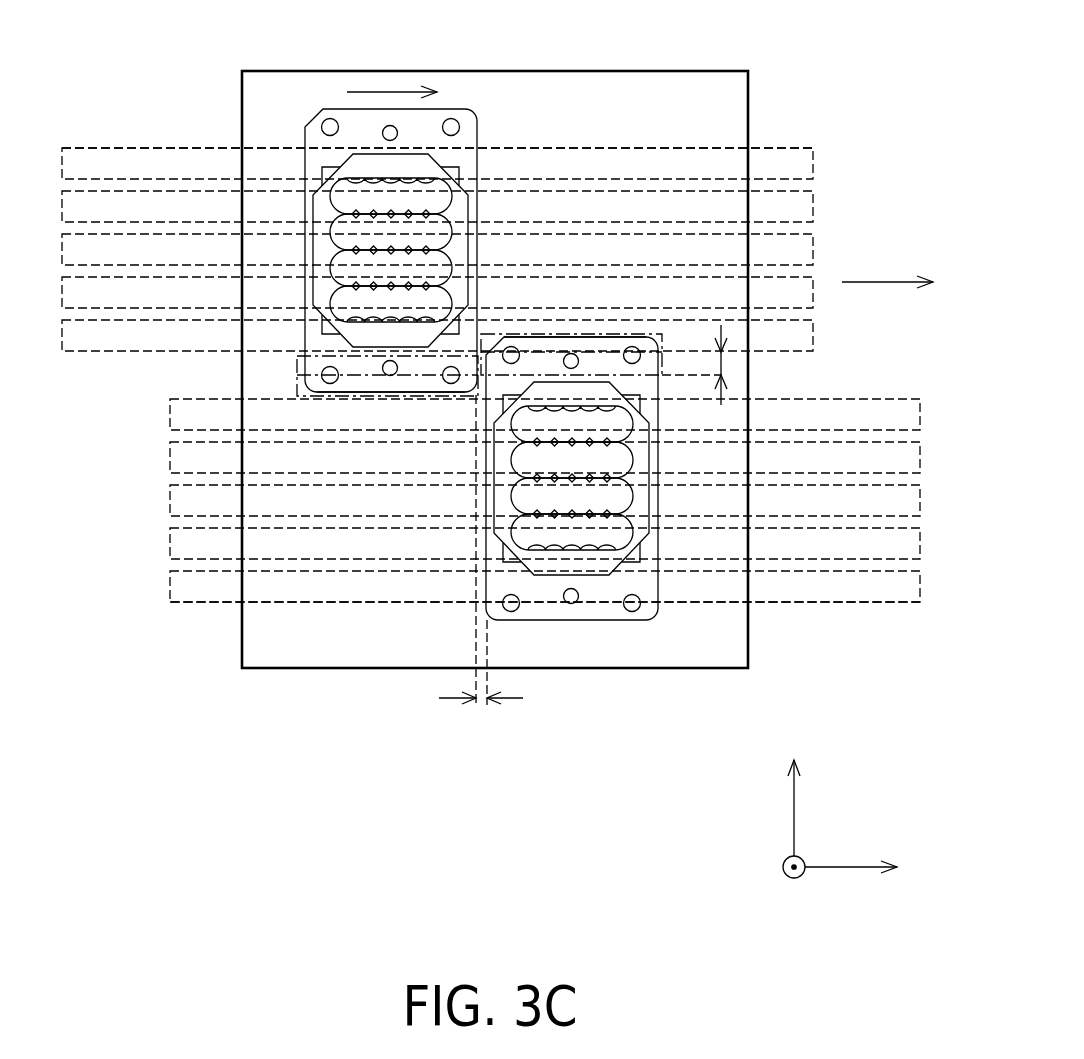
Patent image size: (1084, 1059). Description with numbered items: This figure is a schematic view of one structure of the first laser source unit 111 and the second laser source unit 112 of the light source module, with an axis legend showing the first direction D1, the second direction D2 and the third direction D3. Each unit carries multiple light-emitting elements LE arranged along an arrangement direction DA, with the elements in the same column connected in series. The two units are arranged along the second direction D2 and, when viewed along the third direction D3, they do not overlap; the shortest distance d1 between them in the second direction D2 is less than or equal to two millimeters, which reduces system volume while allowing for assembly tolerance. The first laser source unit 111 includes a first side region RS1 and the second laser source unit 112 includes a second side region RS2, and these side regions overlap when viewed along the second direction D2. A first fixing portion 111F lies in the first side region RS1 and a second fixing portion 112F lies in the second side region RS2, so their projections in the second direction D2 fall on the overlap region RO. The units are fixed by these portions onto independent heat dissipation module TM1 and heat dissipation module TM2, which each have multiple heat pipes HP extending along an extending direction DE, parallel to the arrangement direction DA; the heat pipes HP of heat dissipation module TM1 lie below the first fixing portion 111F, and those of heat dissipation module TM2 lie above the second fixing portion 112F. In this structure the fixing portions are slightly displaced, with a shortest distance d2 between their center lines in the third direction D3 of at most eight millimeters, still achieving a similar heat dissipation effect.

The first laser source unit 111 is at (603, 593).
The second laser source unit 112 is at (311, 128).
The first fixing portion 111F is at (541, 345).
The second fixing portion 112F is at (360, 385).
The light-emitting elements LE is at (415, 200).
The arrangement direction DA is at (388, 88).
The extending direction DE is at (880, 283).
The heat pipes HP is at (650, 147).
The first side region RS1 is at (663, 338).
The second side region RS2 is at (297, 375).
The heat dissipation module TM1 is at (150, 543).
The heat dissipation module TM2 is at (845, 240).
The overlap region RO is at (762, 352).
The shortest distance d1 is at (481, 572).
The shortest distance d2 is at (723, 363).
The first direction D1 is at (776, 884).
The second direction D2 is at (871, 868).
The third direction D3 is at (794, 789).